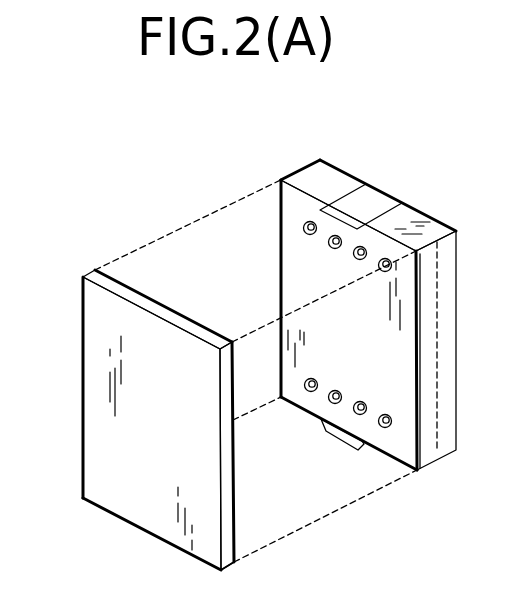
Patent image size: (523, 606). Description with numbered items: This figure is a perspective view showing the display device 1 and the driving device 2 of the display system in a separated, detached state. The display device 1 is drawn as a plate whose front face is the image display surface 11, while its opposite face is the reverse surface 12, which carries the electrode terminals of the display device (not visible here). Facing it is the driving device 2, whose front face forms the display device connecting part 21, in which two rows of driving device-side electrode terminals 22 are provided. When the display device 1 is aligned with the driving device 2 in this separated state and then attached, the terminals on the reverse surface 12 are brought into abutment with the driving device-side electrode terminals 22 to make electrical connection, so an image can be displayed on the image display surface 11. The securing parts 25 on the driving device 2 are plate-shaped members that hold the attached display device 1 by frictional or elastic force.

The display device 1 is at (184, 407).
The image display surface 11 is at (130, 507).
The reverse surface 12 is at (255, 490).
The driving device 2 is at (327, 299).
The display device connecting part 21 is at (288, 281).
The driving device-side electrode terminals 22 is at (303, 228).
The securing parts 25 is at (358, 212).